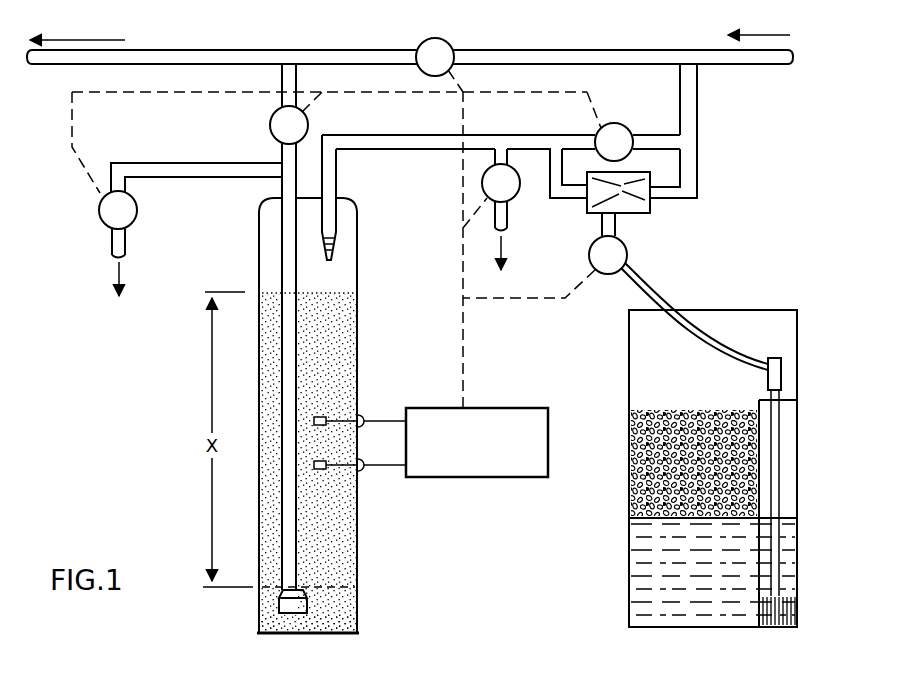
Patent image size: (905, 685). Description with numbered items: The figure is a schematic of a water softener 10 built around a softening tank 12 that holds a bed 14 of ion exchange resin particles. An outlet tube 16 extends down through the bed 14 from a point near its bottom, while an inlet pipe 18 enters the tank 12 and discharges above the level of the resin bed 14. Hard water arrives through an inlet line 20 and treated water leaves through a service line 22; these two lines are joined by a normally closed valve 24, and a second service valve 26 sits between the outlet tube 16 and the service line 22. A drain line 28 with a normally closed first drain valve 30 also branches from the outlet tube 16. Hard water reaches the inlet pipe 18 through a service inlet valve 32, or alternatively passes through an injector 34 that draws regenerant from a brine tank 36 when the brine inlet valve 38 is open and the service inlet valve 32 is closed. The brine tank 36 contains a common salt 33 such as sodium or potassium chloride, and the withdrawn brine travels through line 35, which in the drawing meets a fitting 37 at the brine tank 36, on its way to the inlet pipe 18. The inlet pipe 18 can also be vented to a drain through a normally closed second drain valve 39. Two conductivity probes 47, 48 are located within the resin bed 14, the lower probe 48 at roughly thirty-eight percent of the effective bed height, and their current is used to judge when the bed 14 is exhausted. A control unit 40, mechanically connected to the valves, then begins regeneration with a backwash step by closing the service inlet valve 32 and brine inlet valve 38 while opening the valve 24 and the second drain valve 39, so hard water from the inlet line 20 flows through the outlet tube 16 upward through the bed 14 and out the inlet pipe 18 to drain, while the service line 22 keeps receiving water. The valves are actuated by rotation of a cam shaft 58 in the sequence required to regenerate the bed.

The water softener 10 is at (174, 378).
The softening tank 12 is at (358, 282).
The bed of ion exchange resin particles 14 is at (340, 330).
The outlet tube 16 is at (281, 238).
The inlet pipe 18 is at (337, 247).
The inlet line 20 is at (698, 50).
The service line 22 is at (228, 50).
The normally closed valve 24 is at (450, 42).
The second service valve 26 is at (269, 122).
The drain line 28 is at (148, 163).
The first drain valve 30 is at (99, 210).
The service inlet valve 32 is at (626, 128).
The common salt 33 is at (628, 452).
The injector 34 is at (650, 206).
The line 35 is at (780, 488).
The brine tank 36 is at (797, 310).
The fitting 37 is at (784, 372).
The brine inlet valve 38 is at (628, 246).
The second drain valve 39 is at (517, 197).
The control unit 40 is at (505, 478).
The conductivity probe 47 is at (322, 415).
The lower conductivity probe 48 is at (322, 472).
The cam shaft 58 is at (463, 372).